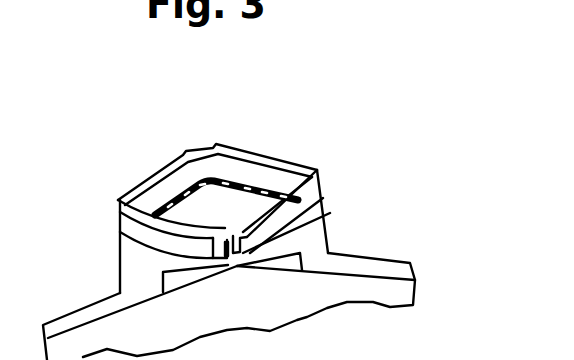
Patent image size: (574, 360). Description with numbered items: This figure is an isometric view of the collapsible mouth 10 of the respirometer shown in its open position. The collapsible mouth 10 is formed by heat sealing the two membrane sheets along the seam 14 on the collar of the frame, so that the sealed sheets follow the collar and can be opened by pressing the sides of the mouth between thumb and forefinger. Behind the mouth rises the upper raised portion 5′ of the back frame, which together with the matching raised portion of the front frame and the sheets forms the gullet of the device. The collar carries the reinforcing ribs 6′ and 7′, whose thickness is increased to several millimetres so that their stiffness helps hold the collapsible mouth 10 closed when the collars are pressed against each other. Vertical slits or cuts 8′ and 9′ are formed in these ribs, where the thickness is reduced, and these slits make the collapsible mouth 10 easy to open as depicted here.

The upper raised portion 5′ is at (356, 266).
The reinforcing rib 6′ is at (133, 227).
The reinforcing rib 7′ is at (178, 282).
The vertical slit 8′ is at (226, 238).
The vertical slit 9′ is at (237, 267).
The collapsible mouth 10 is at (237, 215).
The seam 14 is at (230, 181).